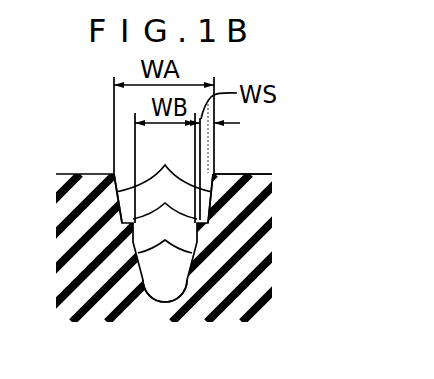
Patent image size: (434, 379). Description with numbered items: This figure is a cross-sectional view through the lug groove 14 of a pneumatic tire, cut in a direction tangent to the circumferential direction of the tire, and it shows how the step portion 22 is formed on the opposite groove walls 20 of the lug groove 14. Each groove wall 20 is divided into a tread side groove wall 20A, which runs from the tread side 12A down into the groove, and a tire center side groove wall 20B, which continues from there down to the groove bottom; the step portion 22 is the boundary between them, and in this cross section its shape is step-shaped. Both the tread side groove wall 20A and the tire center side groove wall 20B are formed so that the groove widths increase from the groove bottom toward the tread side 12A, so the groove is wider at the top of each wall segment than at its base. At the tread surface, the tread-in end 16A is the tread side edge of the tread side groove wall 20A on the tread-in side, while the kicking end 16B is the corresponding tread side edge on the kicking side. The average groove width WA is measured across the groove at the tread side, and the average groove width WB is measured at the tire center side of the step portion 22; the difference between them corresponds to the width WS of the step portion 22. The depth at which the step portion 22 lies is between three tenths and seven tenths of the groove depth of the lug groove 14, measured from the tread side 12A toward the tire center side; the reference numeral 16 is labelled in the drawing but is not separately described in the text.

The tread side 12A is at (256, 173).
The lug groove 14 is at (141, 176).
The wall portion 16 is at (72, 172).
The tread-in end 16A is at (114, 180).
The kicking end 16B is at (203, 172).
The groove walls 20 is at (186, 274).
The tread side groove wall 20A is at (164, 164).
The tire center side groove wall 20B is at (165, 233).
The step portion 22 is at (165, 196).